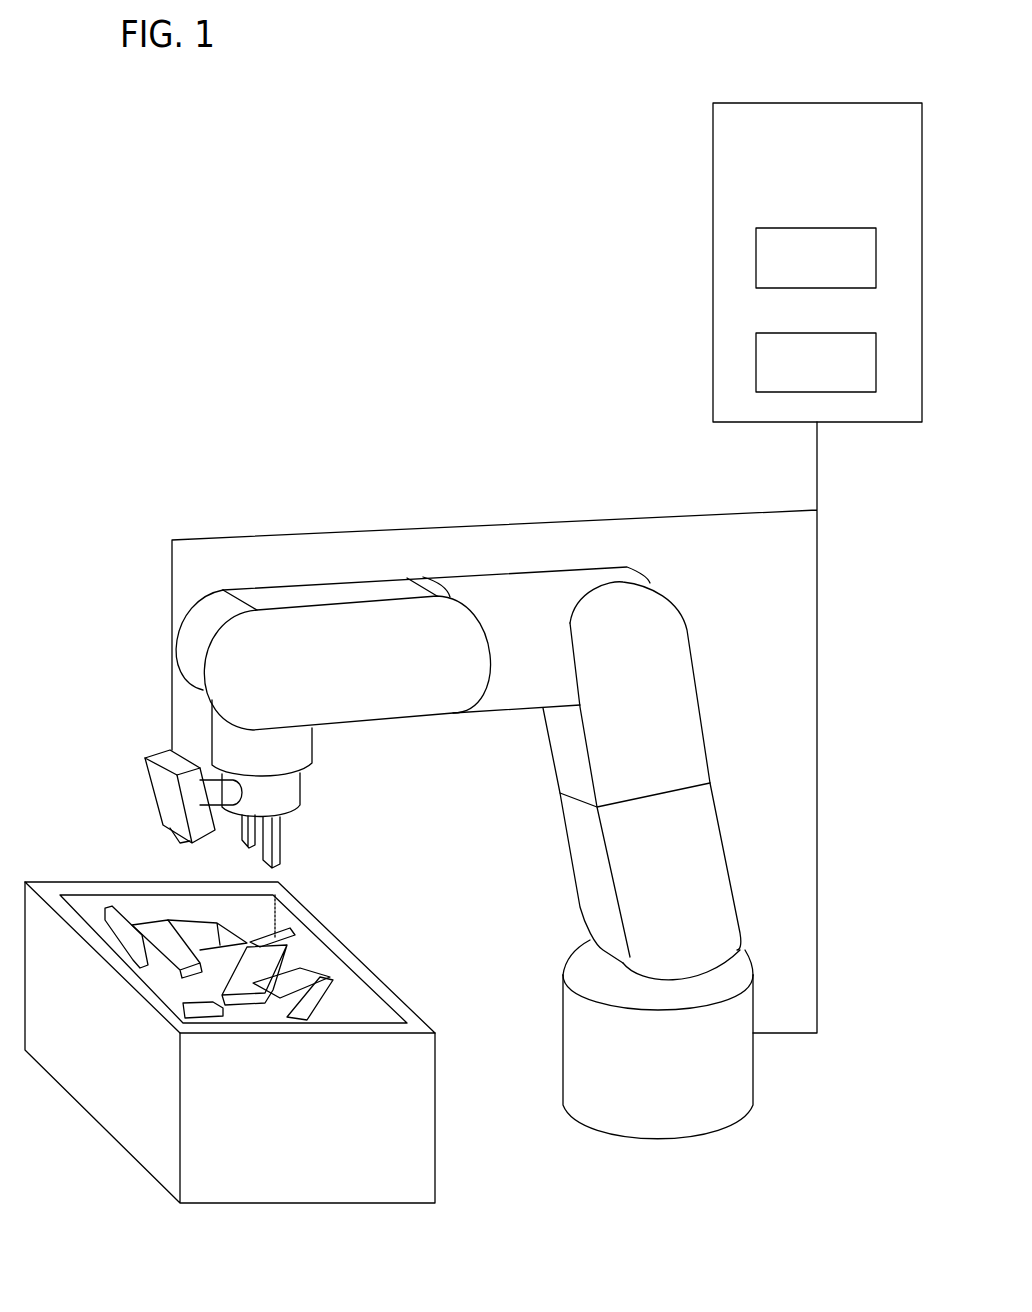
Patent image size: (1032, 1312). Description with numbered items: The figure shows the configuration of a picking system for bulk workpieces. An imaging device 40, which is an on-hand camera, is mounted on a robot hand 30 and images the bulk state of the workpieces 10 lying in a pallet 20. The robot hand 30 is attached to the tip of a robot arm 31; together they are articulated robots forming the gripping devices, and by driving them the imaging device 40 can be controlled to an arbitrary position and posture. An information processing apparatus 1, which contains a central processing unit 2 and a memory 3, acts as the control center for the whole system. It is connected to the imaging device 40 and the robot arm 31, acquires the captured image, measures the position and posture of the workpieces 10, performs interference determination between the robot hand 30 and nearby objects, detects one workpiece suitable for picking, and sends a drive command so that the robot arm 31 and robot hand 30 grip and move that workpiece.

The information processing apparatus 1 is at (845, 103).
The central processing unit (CPU) 2 is at (852, 228).
The memory 3 is at (852, 333).
The workpieces 10 is at (250, 942).
The pallet 20 is at (110, 1137).
The robot hand 30 is at (313, 790).
The robot arm 31 is at (703, 1139).
The imaging device 40 is at (155, 752).